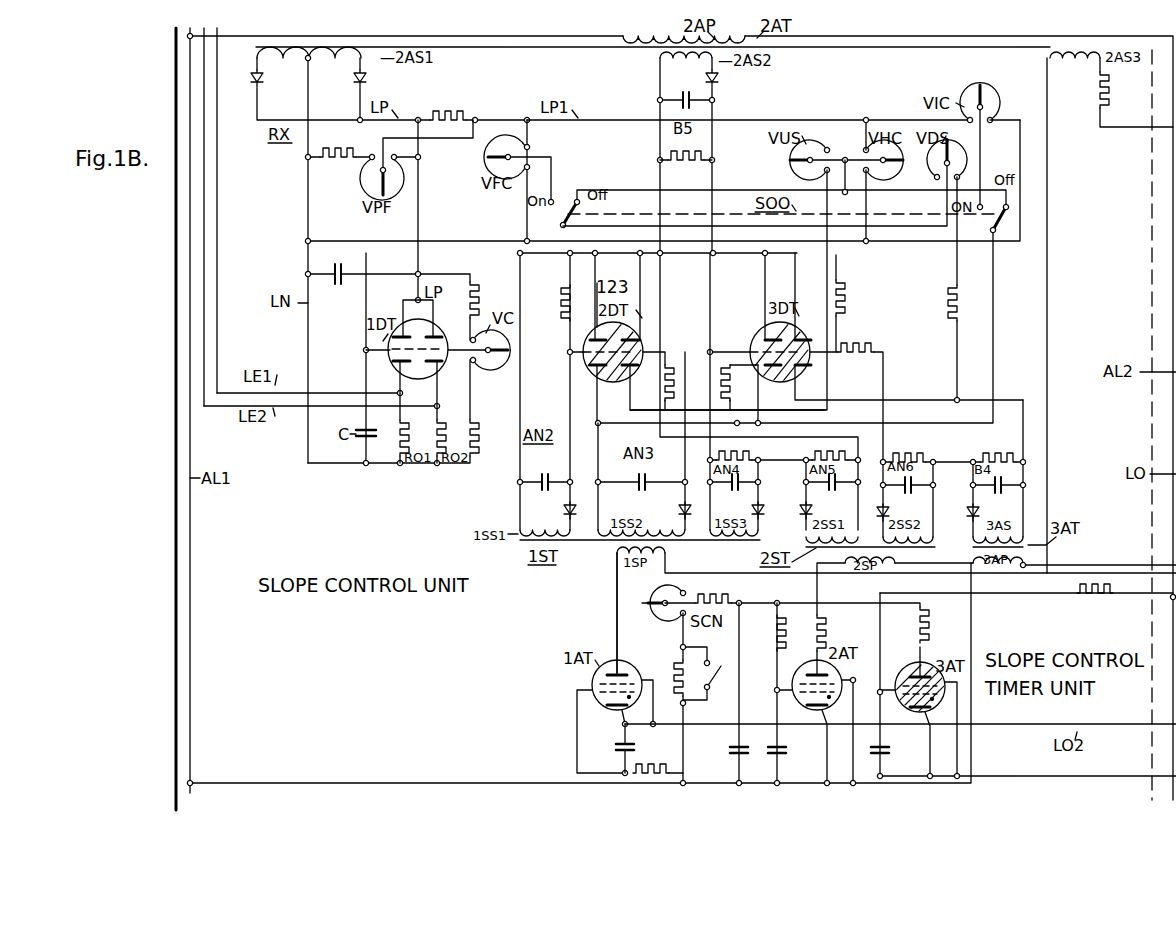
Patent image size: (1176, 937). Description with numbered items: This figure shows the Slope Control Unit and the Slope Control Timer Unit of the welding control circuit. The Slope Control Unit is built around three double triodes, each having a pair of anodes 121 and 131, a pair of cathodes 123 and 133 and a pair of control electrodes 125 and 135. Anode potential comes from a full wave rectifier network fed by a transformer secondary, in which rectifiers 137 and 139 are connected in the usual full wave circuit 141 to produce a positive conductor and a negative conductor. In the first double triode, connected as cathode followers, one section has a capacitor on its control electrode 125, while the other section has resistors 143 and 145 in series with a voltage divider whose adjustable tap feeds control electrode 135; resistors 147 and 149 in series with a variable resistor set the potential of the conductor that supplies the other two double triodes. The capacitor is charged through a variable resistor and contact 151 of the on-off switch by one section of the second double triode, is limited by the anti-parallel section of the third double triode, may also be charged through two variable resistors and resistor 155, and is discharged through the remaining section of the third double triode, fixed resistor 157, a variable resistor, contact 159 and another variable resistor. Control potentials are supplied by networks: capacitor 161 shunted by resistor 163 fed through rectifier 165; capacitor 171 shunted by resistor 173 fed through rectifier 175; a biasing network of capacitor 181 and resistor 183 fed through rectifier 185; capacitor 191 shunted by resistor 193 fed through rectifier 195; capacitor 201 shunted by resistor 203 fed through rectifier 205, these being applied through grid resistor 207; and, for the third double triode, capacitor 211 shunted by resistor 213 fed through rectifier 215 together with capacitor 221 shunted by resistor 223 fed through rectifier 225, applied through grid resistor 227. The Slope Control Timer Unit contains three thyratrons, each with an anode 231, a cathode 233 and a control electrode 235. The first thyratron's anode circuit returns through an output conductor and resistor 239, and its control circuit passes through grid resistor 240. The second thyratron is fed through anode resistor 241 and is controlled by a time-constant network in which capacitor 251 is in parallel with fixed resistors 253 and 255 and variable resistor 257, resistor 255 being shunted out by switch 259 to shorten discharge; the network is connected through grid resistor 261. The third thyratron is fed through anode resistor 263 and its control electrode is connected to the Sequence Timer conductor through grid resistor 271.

The rectifier 137 is at (265, 78).
The rectifier 139 is at (368, 78).
The full wave circuit 141 is at (344, 92).
The resistor 143 is at (472, 298).
The resistor 145 is at (472, 454).
The resistor 147 is at (356, 150).
The resistor 149 is at (452, 106).
The contact of on-off switch SOO 151 is at (814, 313).
The resistor 155 is at (847, 293).
The fixed resistor 157 is at (952, 320).
The contact of off-on switch SOO 159 is at (566, 215).
The capacitor 161 is at (545, 470).
The resistor 163 is at (562, 304).
The rectifier 165 is at (562, 514).
The capacitor 171 is at (649, 478).
The resistor 173 is at (722, 390).
The rectifier 175 is at (678, 514).
The capacitor 181 is at (690, 88).
The resistor 183 is at (686, 167).
The rectifier 185 is at (718, 80).
The capacitor 191 is at (734, 491).
The resistor 193 is at (744, 455).
The rectifier 195 is at (762, 506).
The capacitor 201 is at (835, 488).
The resistor 203 is at (823, 456).
The rectifier 205 is at (818, 510).
The grid resistor 207 is at (676, 379).
The capacitor 211 is at (1001, 491).
The resistor 213 is at (998, 444).
The rectifier 215 is at (979, 512).
The capacitor 221 is at (922, 482).
The resistor 223 is at (908, 444).
The rectifier 225 is at (889, 512).
The grid resistor 227 is at (856, 343).
The resistor 239 is at (1118, 92).
The grid resistor 240 is at (634, 748).
The anode resistor 241 is at (823, 644).
The capacitor 251 is at (728, 752).
The fixed resistor 253 is at (722, 590).
The fixed resistor 255 is at (669, 657).
The variable resistor 257 is at (656, 593).
The switch 259 is at (718, 694).
The grid resistor 261 is at (778, 640).
The anode resistor 263 is at (934, 620).
The grid resistor 271 is at (1095, 595).
The anode 121 is at (764, 337).
The cathode 123 is at (591, 382).
The control electrode 125 is at (755, 352).
The anode 131 is at (802, 329).
The cathode 133 is at (628, 334).
The control electrode 135 is at (810, 356).
The anode 231 is at (909, 674).
The cathode 233 is at (916, 714).
The control electrode 235 is at (901, 688).